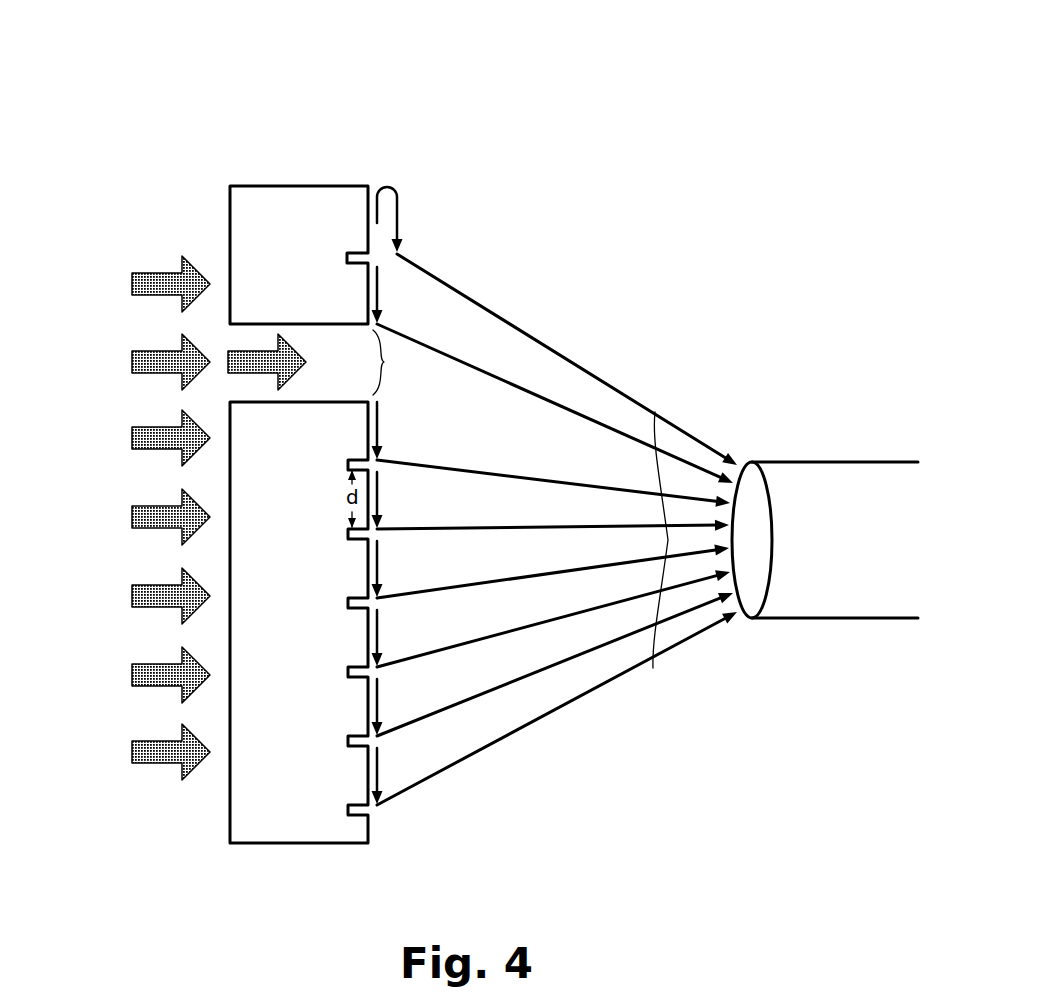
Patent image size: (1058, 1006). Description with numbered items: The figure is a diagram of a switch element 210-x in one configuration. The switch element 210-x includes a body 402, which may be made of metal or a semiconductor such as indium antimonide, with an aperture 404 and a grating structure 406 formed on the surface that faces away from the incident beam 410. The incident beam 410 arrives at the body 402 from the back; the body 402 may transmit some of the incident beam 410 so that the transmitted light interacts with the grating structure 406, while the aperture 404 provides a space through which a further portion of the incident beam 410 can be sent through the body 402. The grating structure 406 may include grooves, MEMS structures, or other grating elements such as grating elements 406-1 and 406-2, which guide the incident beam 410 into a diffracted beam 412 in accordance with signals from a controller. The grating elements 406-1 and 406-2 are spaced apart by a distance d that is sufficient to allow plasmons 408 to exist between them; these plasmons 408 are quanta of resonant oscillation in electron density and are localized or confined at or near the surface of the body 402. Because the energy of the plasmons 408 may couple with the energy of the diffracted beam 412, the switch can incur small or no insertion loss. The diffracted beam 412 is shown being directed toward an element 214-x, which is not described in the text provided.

The switch element 210-x is at (268, 84).
The body 402 is at (298, 186).
The aperture 404 is at (384, 362).
The grating structure 406 is at (330, 430).
The grating element 406-1 is at (352, 466).
The grating element 406-2 is at (352, 535).
The plasmons 408 is at (386, 286).
The incident beam 410 is at (112, 283).
The diffracted beam 412 is at (722, 608).
The optical fiber 214-x is at (840, 462).